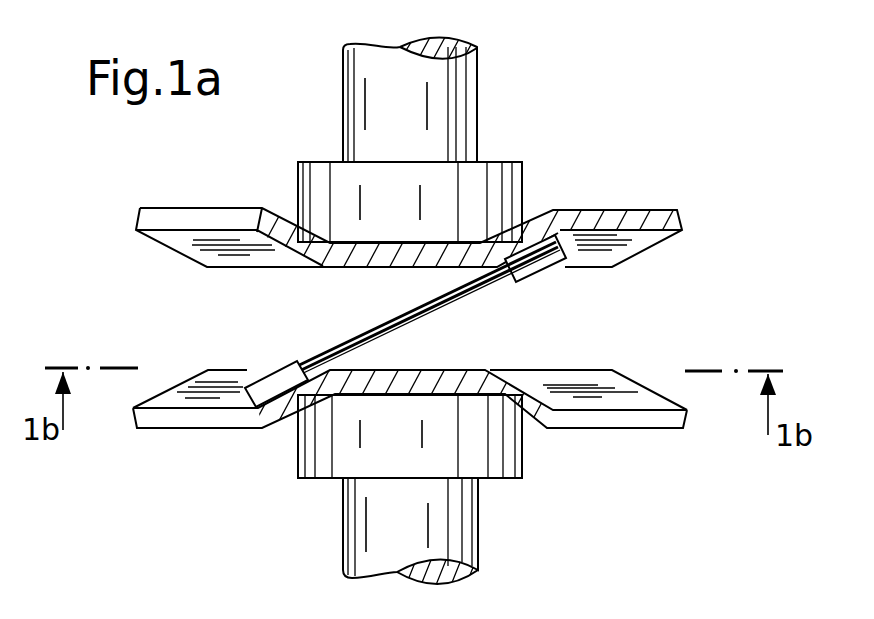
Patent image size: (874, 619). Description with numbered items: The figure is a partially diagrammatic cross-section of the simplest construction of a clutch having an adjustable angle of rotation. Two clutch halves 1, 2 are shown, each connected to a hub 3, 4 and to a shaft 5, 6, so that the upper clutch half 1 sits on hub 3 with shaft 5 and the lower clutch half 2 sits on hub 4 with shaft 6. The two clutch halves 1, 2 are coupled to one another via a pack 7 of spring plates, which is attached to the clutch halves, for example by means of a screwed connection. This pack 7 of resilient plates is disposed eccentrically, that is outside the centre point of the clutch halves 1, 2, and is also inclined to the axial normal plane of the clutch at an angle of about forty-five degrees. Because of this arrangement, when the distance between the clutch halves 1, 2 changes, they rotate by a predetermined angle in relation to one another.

The clutch half 1 is at (662, 217).
The clutch half 2 is at (632, 400).
The hub 3 is at (503, 183).
The hub 4 is at (498, 463).
The shaft 5 is at (452, 83).
The shaft 6 is at (453, 543).
The pack of spring plates 7 is at (472, 300).